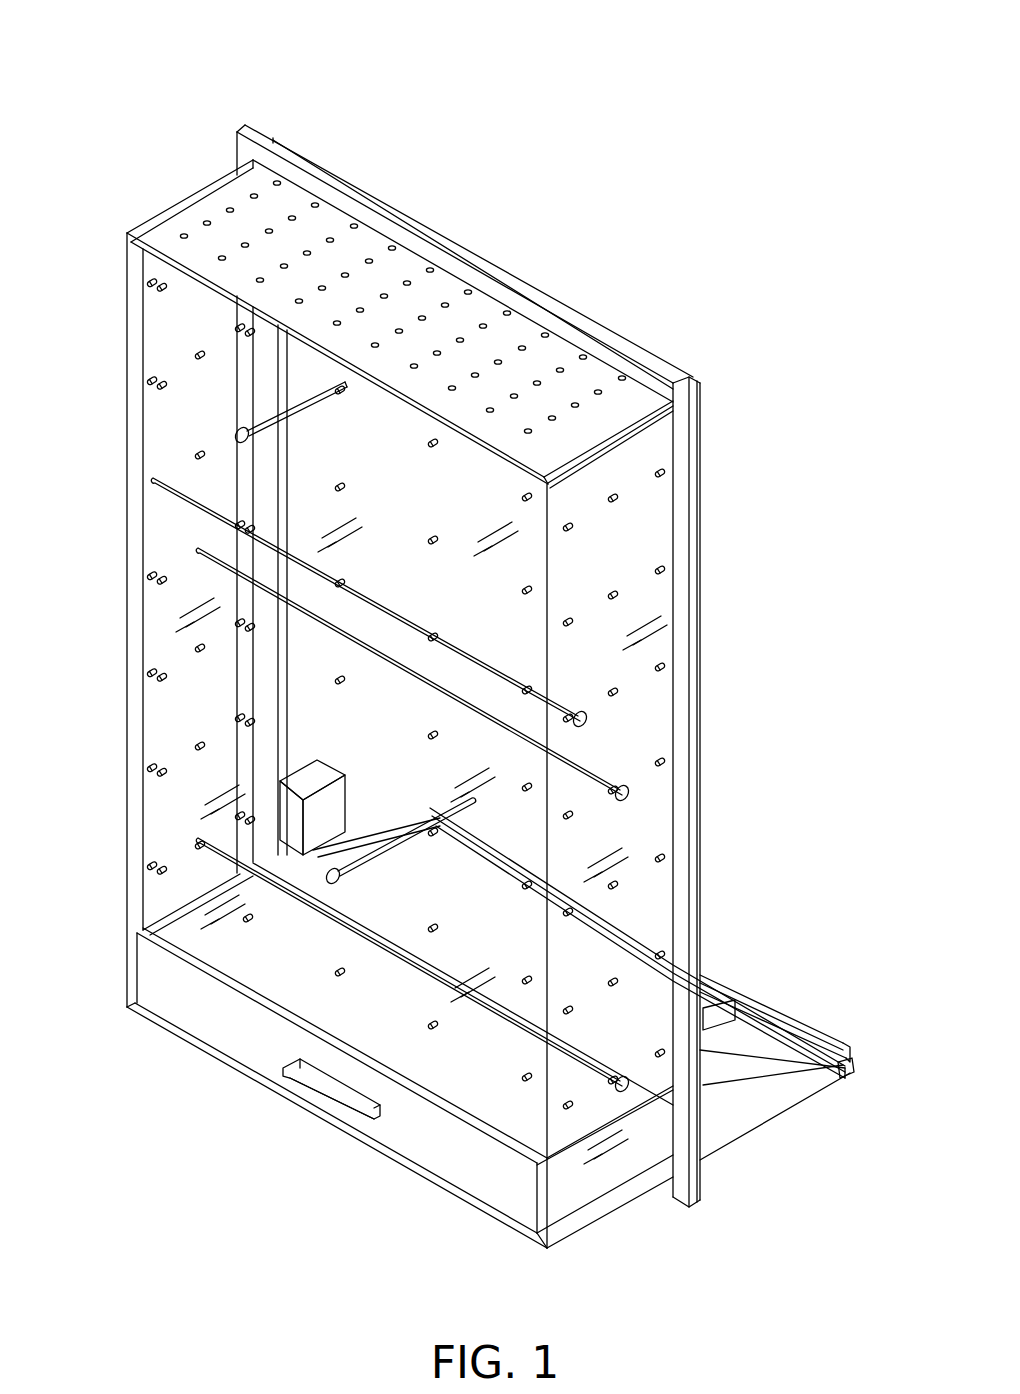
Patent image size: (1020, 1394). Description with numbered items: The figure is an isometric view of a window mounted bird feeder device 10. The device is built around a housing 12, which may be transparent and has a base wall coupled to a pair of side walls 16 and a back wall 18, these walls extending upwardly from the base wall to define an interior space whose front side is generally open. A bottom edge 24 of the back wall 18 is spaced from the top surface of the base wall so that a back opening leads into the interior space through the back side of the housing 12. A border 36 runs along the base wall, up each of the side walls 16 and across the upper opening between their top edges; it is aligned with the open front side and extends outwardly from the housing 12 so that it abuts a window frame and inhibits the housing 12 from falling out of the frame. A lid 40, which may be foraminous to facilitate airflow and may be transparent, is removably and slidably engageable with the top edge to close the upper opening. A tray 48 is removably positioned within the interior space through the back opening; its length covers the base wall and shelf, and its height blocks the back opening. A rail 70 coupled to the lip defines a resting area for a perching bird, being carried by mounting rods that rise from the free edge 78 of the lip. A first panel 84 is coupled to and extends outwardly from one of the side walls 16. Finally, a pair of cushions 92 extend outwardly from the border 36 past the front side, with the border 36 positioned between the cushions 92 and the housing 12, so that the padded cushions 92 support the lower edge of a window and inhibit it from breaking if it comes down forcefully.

The window mounted bird feeder device 10 is at (166, 182).
The housing 12 is at (632, 460).
The pair of side walls 16 is at (172, 543).
The back wall 18 is at (175, 727).
The bottom edge 24 is at (173, 945).
The border 36 is at (695, 549).
The lid 40 is at (613, 407).
The tray 48 is at (467, 1162).
The rail 70 is at (825, 1035).
The free edge 78 is at (840, 1075).
The first panel 84 is at (753, 1070).
The pair of cushions 92 is at (310, 796).